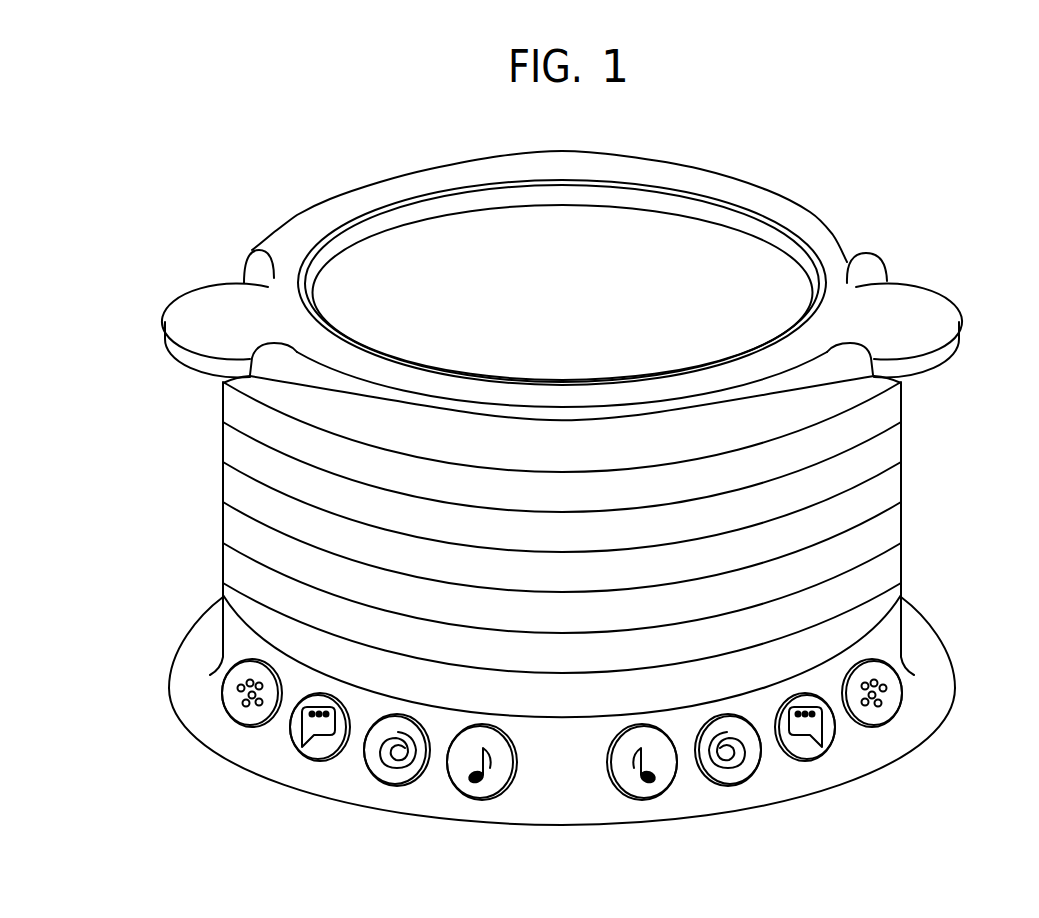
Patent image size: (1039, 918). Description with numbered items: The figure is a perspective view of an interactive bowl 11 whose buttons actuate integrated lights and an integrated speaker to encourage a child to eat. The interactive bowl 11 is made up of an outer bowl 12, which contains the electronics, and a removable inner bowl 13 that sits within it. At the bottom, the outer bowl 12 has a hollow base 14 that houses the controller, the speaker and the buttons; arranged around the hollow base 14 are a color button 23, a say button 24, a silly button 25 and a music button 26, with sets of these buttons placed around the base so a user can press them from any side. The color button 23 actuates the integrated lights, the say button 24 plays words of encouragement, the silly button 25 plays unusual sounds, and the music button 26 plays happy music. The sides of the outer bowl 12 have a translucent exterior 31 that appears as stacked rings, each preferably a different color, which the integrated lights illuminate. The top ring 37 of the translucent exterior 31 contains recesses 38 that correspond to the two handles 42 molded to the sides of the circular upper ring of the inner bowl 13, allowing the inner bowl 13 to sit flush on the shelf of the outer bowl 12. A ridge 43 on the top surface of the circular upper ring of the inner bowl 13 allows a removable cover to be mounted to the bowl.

The interactive bowl 11 is at (786, 161).
The outer bowl 12 is at (905, 566).
The removable inner bowl 13 is at (845, 284).
The hollow base 14 is at (925, 655).
The color button 23 is at (247, 700).
The say button 24 is at (320, 745).
The silly button 25 is at (387, 768).
The music button 26 is at (482, 790).
The translucent exterior 31 is at (875, 443).
The top ring 37 is at (620, 176).
The recesses 38 is at (250, 275).
The handles 42 is at (182, 313).
The ridge 43 is at (400, 213).